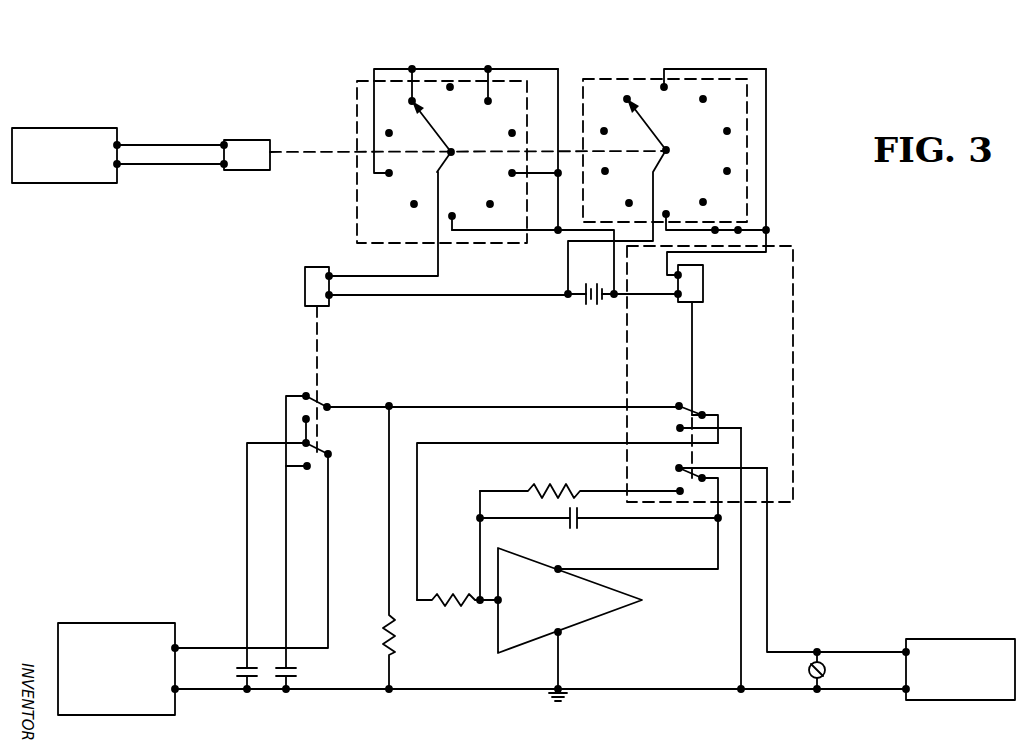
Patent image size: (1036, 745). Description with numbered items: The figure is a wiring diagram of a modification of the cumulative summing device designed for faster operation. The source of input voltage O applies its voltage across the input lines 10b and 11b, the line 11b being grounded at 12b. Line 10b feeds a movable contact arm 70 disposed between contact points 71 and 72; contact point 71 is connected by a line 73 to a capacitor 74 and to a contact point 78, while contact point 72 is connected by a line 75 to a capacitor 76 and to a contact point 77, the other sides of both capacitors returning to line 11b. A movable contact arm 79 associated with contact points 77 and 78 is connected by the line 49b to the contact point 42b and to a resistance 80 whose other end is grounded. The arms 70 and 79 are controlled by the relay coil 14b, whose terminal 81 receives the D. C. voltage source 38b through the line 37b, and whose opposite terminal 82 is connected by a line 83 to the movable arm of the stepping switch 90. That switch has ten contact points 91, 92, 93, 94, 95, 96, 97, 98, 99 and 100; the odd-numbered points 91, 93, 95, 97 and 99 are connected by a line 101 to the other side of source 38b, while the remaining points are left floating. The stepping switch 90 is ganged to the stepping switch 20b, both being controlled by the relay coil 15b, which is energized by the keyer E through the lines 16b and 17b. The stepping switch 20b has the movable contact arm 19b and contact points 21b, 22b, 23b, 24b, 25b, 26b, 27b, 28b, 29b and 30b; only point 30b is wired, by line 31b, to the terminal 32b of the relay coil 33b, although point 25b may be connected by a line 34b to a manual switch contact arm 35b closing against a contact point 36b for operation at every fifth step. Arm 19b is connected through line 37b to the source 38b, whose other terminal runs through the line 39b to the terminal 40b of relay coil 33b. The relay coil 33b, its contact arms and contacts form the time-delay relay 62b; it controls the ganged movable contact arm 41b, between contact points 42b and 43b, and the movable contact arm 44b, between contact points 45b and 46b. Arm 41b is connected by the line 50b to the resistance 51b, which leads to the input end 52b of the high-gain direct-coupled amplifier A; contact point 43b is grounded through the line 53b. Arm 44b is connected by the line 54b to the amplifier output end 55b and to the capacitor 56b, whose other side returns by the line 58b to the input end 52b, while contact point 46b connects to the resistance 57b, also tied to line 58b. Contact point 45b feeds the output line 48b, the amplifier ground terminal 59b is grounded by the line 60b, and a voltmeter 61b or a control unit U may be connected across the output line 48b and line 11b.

The keyer E is at (62, 128).
The line 16b is at (188, 145).
The line 17b is at (180, 164).
The relay coil 15b is at (243, 140).
The stepping switch 90 is at (354, 105).
The contact point 100 is at (450, 85).
The line 101 is at (503, 69).
The contact point 91 is at (415, 101).
The contact point 92 is at (392, 133).
The contact point 93 is at (392, 173).
The contact point 94 is at (415, 202).
The contact point 95 is at (452, 213).
The contact point 96 is at (490, 201).
The contact point 97 is at (510, 173).
The contact point 98 is at (510, 133).
The contact point 99 is at (486, 102).
The relay coil 14b is at (305, 282).
The terminal 81 is at (332, 297).
The terminal 82 is at (331, 275).
The line 83 is at (413, 276).
The line 37b is at (492, 294).
The stepping switch 20b is at (752, 113).
The movable contact arm 19b is at (655, 127).
The contact point 30b is at (662, 84).
The line 31b is at (767, 186).
The contact point 21b is at (626, 98).
The contact point 22b is at (603, 128).
The contact point 23b is at (607, 170).
The contact point 24b is at (628, 201).
The contact point 25b is at (672, 207).
The contact point 26b is at (703, 199).
The contact point 27b is at (725, 169).
The contact point 28b is at (724, 131).
The contact point 29b is at (701, 100).
The line 34b is at (696, 233).
The switch contact arm 35b is at (716, 227).
The contact point 36b is at (741, 229).
The D. C. voltage source 38b is at (580, 298).
The line 39b is at (656, 296).
The relay coil 33b is at (704, 291).
The terminal 32b is at (681, 274).
The terminal 40b is at (691, 325).
The relay 62b is at (795, 298).
The contact point 77 is at (306, 394).
The movable contact arm 79 is at (326, 405).
The contact point 78 is at (303, 418).
The contact point 71 is at (303, 442).
The movable contact arm 70 is at (328, 451).
The contact point 72 is at (307, 469).
The line 73 is at (247, 507).
The line 75 is at (286, 538).
The capacitor 74 is at (237, 668).
The capacitor 76 is at (298, 660).
The input line 10b is at (226, 648).
The input line 11b is at (200, 689).
The source of input voltage O is at (118, 623).
The resistance 80 is at (397, 643).
The line 49b is at (511, 406).
The contact point 42b is at (678, 403).
The movable contact arm 41b is at (703, 412).
The contact point 43b is at (678, 427).
The contact point 45b is at (677, 467).
The movable contact arm 44b is at (700, 476).
The contact point 46b is at (678, 489).
The line 53b is at (741, 650).
The output line 48b is at (835, 652).
The voltmeter 61b is at (826, 670).
The control unit U is at (936, 639).
The line 50b is at (478, 509).
The resistance 51b is at (440, 605).
The input end 52b is at (494, 604).
The line 58b is at (478, 547).
The resistance 57b is at (562, 486).
The capacitor 56b is at (579, 518).
The line 54b is at (650, 569).
The output end 55b is at (560, 569).
The direct-coupled amplifier A is at (501, 653).
The ground terminal 59b is at (562, 633).
The line 60b is at (560, 656).
The ground 12b is at (567, 692).